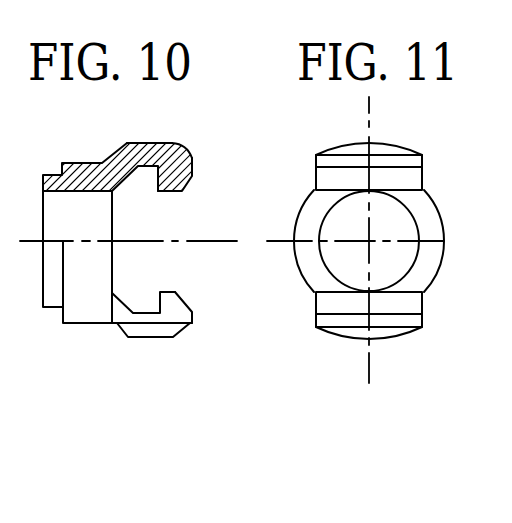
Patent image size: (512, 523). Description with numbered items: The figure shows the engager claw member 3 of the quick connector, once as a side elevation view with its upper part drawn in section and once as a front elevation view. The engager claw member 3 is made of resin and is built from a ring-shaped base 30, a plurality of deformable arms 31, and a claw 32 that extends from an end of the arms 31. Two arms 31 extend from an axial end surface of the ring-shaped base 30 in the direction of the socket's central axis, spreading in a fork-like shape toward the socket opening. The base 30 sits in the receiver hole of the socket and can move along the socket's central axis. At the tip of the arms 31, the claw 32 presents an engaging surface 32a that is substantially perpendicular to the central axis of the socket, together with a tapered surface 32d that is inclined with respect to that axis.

In FIG. 10, the engager claw member 3 is at (127, 274).
In FIG. 11, the engager claw member 3 is at (362, 283).
In FIG. 10, the ring-shaped base 30 is at (73, 162).
In FIG. 11, the ring-shaped base 30 is at (422, 273).
In FIG. 10, the deformable arms 31 is at (140, 146).
In FIG. 11, the deformable arms 31 is at (352, 152).
In FIG. 10, the claw 32 is at (178, 150).
In FIG. 11, the claw 32 is at (340, 183).
In FIG. 10, the engaging surface 32a is at (157, 172).
In FIG. 10, the tapered surface 32d is at (183, 180).
In FIG. 11, the tapered surface 32d is at (397, 178).